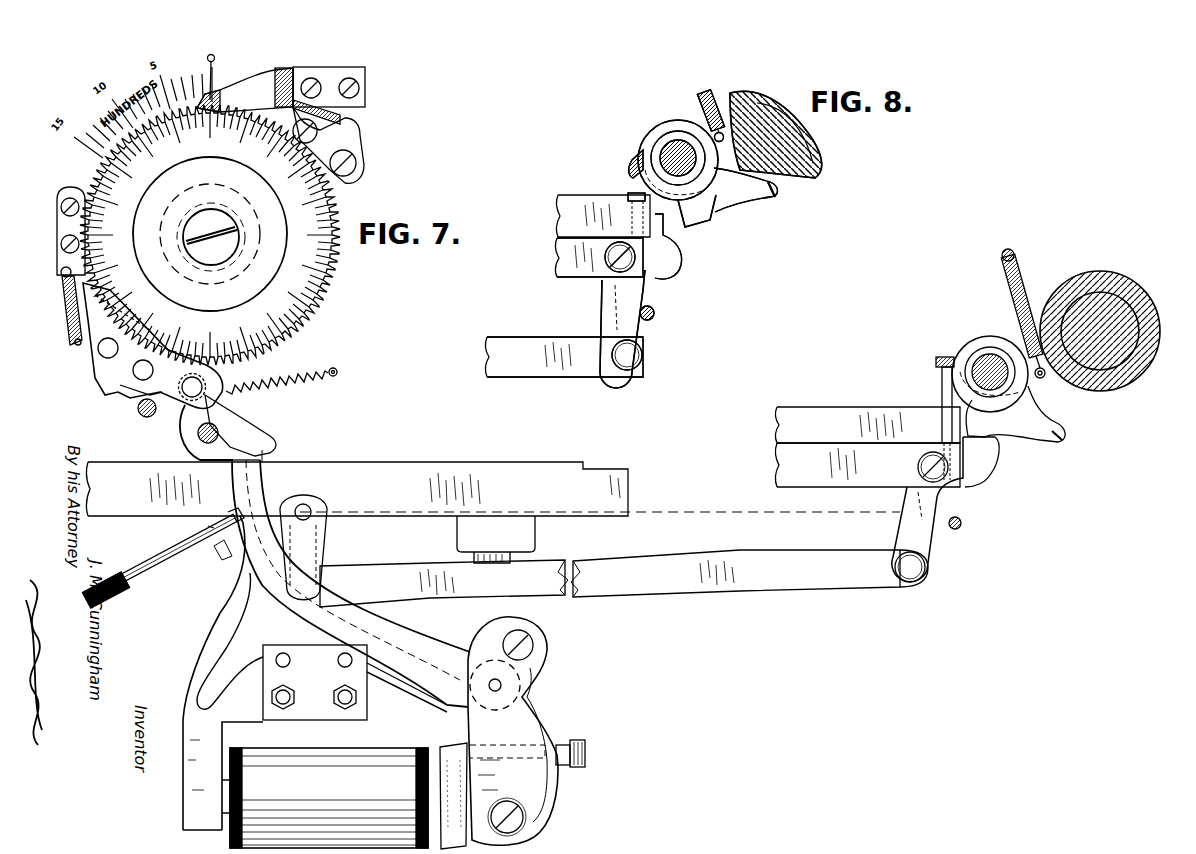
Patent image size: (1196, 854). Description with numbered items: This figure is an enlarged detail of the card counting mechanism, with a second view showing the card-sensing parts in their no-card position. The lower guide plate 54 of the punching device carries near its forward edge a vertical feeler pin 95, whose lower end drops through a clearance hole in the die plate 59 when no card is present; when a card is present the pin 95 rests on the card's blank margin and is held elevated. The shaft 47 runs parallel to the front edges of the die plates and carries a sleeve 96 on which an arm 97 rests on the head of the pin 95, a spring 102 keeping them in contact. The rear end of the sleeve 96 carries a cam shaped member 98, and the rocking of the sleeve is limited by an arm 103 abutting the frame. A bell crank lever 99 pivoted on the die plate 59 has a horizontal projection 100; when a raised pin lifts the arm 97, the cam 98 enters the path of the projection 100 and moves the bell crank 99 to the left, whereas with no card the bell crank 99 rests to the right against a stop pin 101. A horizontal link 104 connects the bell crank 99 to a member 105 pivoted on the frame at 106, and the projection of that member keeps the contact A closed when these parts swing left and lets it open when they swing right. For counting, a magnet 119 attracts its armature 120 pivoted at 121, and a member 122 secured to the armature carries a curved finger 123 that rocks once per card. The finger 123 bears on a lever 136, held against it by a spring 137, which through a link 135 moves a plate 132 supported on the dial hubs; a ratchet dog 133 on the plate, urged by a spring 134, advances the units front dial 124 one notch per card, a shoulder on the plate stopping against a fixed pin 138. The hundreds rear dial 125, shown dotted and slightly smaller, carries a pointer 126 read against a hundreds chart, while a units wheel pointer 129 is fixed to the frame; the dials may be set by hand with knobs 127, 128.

In FIG. 7, the shaft 47 is at (990, 362).
In FIG. 8, the shaft 47 is at (677, 146).
In FIG. 7, the lower guide plate 54 is at (830, 420).
In FIG. 8, the lower guide plate 54 is at (574, 210).
In FIG. 7, the die plate 59 is at (812, 478).
In FIG. 8, the die plate 59 is at (576, 268).
In FIG. 7, the feeler pin 95 is at (942, 381).
In FIG. 8, the feeler pin 95 is at (632, 195).
In FIG. 7, the sleeve 96 is at (1008, 345).
In FIG. 8, the sleeve 96 is at (706, 200).
In FIG. 7, the arm 97 is at (944, 357).
In FIG. 8, the arm 97 is at (634, 162).
In FIG. 7, the cam shaped member 98 is at (1016, 412).
In FIG. 8, the cam shaped member 98 is at (728, 190).
In FIG. 7, the bell crank lever 99 is at (925, 537).
In FIG. 8, the bell crank lever 99 is at (645, 327).
In FIG. 7, the horizontal projection 100 is at (995, 440).
In FIG. 8, the horizontal projection 100 is at (672, 250).
In FIG. 7, the stop pin 101 is at (962, 521).
In FIG. 8, the stop pin 101 is at (655, 312).
In FIG. 7, the spring 102 is at (1014, 264).
In FIG. 8, the spring 102 is at (713, 93).
In FIG. 7, the arm 103 is at (1062, 437).
In FIG. 8, the arm 103 is at (782, 192).
In FIG. 7, the horizontal link 104 is at (690, 588).
In FIG. 8, the horizontal link 104 is at (538, 362).
In FIG. 7, the member 105 is at (222, 570).
In FIG. 7, the pivot 106 is at (308, 508).
In FIG. 7, the contact A is at (208, 526).
In FIG. 7, the magnet 119 is at (352, 762).
In FIG. 7, the armature 120 is at (452, 756).
In FIG. 7, the armature pivot 121 is at (501, 685).
In FIG. 7, the member 122 is at (520, 737).
In FIG. 7, the curved finger 123 is at (246, 480).
In FIG. 7, the front dial 124 is at (325, 288).
In FIG. 7, the rear dial 125 is at (340, 266).
In FIG. 7, the pointer 126 is at (212, 90).
In FIG. 7, the knob 127 is at (280, 197).
In FIG. 7, the knob 128 is at (255, 222).
In FIG. 7, the units wheel pointer 129 is at (352, 133).
In FIG. 7, the plate 132 is at (112, 392).
In FIG. 7, the ratchet dog 133 is at (70, 338).
In FIG. 7, the spring 134 is at (92, 328).
In FIG. 7, the link 135 is at (185, 405).
In FIG. 7, the lever 136 is at (236, 420).
In FIG. 7, the spring / pivot 137 is at (297, 372).
In FIG. 7, the fixed pin 138 is at (140, 413).